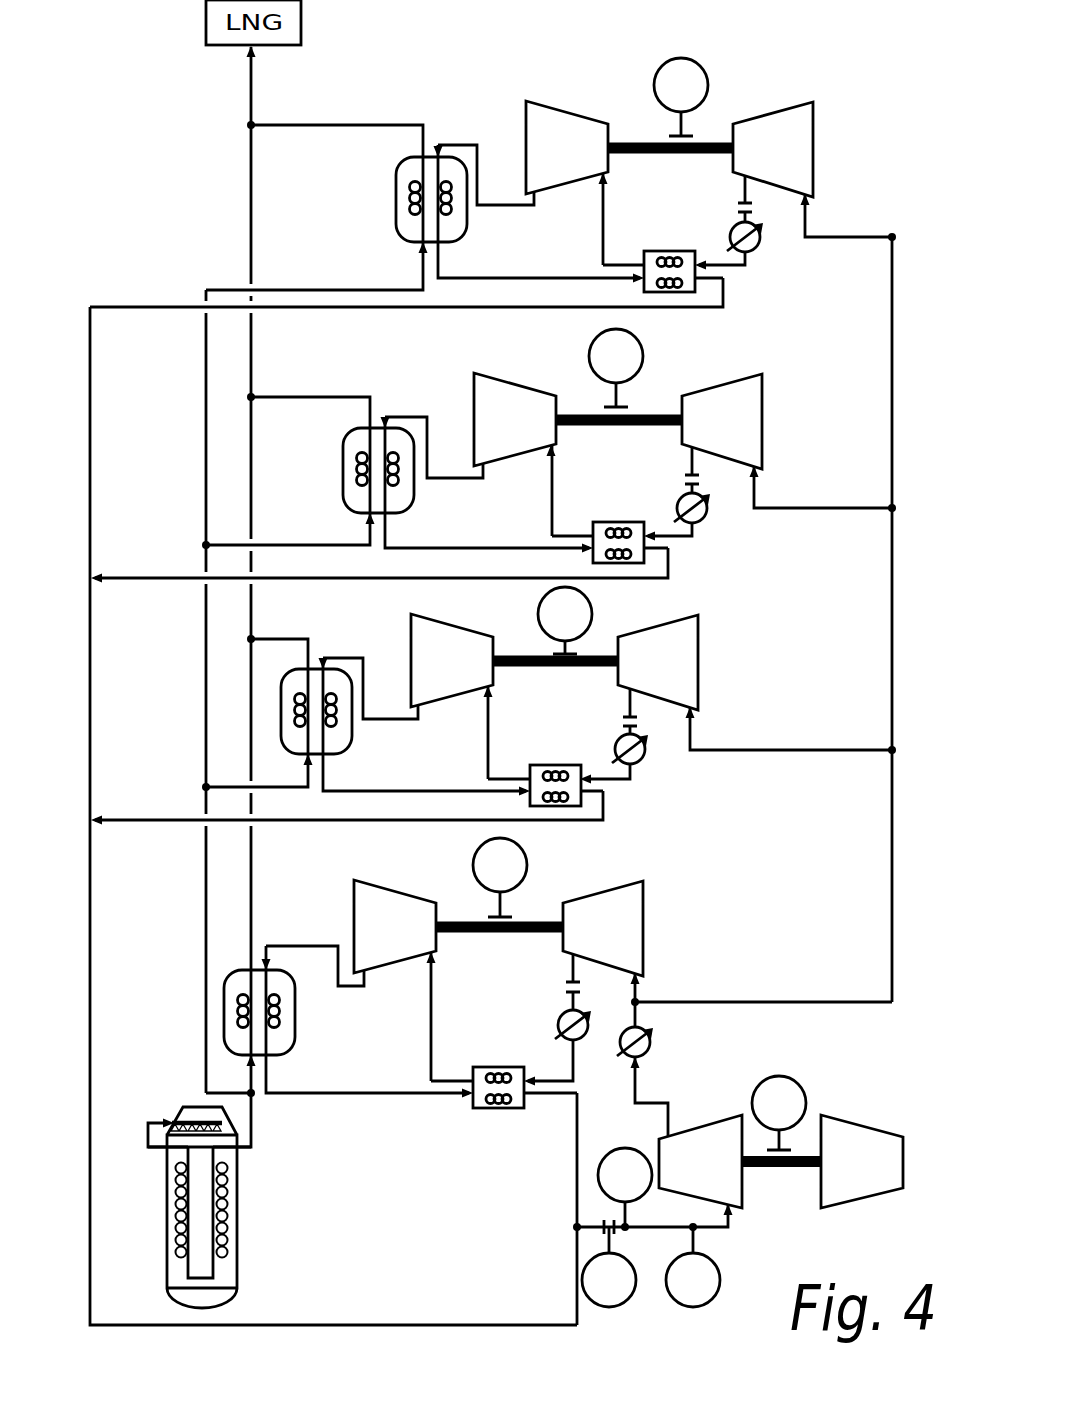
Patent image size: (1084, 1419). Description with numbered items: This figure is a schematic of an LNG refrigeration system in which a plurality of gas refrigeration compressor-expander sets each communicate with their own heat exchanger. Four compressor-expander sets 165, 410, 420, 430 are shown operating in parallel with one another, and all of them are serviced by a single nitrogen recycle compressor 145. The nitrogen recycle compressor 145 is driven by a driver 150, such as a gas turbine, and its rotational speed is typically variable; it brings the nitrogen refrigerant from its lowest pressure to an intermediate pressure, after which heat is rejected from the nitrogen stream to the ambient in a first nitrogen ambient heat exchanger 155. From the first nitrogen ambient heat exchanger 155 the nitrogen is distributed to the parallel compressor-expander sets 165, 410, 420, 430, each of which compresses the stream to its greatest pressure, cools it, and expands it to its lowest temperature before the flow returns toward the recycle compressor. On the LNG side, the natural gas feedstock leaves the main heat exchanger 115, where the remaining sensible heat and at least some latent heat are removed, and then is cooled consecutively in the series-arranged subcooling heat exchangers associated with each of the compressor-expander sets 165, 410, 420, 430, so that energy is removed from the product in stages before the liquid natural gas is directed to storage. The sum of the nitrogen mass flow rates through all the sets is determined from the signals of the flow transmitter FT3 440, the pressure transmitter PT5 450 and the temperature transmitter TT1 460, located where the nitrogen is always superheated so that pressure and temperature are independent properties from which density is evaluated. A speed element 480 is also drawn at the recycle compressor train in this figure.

The main heat exchanger 115 is at (230, 1208).
The nitrogen recycle compressor 145 is at (722, 1175).
The driver 150 is at (882, 1175).
The first nitrogen ambient heat exchanger 155 is at (646, 1058).
The compressor-expander set 165 is at (667, 905).
The compressor-expander set 410 is at (718, 646).
The compressor-expander set 420 is at (782, 413).
The compressor-expander set 430 is at (505, 142).
The flow transmitter FT3 440 is at (614, 1298).
The pressure transmitter PT5 450 is at (627, 1153).
The temperature transmitter TT1 460 is at (703, 1297).
The speed element SE1 480 is at (805, 1101).